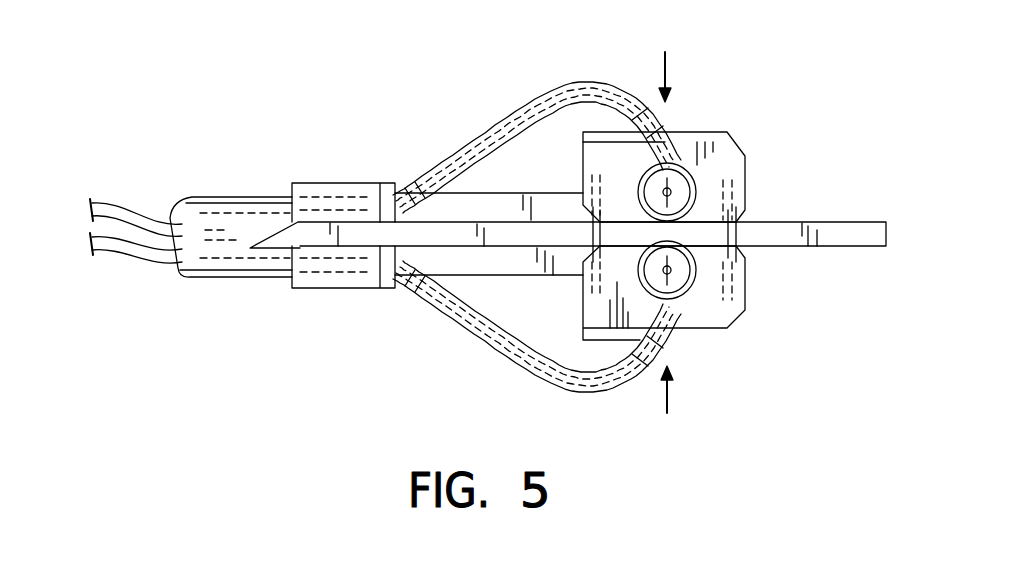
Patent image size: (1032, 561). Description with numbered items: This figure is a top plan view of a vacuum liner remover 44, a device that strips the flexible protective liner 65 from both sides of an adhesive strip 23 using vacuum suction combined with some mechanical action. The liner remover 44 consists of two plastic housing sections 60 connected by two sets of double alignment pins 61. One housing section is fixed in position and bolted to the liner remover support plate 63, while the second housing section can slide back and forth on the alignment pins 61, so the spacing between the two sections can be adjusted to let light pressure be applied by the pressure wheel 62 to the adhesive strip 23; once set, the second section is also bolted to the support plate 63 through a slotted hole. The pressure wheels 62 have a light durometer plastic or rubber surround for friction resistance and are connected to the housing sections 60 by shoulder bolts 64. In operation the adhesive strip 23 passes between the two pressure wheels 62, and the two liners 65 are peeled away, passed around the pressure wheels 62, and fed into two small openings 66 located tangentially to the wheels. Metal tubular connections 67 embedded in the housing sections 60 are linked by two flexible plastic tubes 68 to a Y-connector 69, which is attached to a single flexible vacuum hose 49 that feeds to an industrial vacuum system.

The adhesive strip 23 is at (853, 247).
The vacuum liner remover 44 is at (822, 101).
The single flexible vacuum hose 49 is at (222, 262).
The plastic housing sections 60 is at (747, 185).
The double alignment pins 61 is at (597, 238).
The pressure wheel 62 is at (671, 192).
The liner remover support plate 63 is at (496, 266).
The shoulder bolts 64 is at (700, 174).
The flexible protective liner 65 is at (123, 250).
The small openings 66 is at (690, 163).
The metal tubular connections 67 is at (662, 132).
The flexible plastic tubes 68 is at (537, 106).
The Y-connector 69 is at (407, 283).